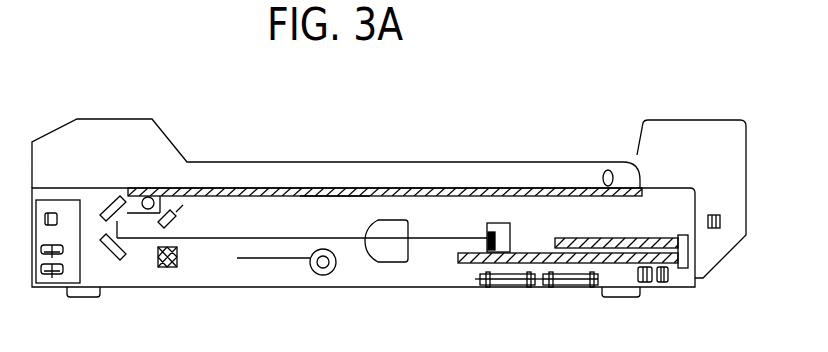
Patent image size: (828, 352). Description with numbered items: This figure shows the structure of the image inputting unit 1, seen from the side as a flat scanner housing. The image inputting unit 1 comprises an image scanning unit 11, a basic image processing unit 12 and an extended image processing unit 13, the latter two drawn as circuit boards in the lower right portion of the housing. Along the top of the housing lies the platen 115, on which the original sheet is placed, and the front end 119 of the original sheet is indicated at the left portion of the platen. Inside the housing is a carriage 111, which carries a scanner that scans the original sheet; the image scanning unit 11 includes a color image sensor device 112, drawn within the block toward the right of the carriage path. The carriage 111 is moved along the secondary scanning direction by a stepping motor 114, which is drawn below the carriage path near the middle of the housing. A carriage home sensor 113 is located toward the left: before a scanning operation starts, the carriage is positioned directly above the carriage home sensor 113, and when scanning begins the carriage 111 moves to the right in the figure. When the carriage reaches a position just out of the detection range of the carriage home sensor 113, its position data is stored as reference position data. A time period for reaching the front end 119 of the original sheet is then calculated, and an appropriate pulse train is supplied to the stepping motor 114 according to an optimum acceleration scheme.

The image inputting unit 1 is at (118, 95).
The image scanning unit 11 is at (505, 223).
The basic image processing unit 12 is at (458, 265).
The extended image processing unit 13 is at (633, 240).
The carriage 111 is at (180, 222).
The color image sensor device 112 is at (489, 240).
The carriage home sensor 113 is at (170, 267).
The stepping motor 114 is at (323, 275).
The platen 115 is at (330, 206).
The front end of the original sheet 119 is at (203, 183).